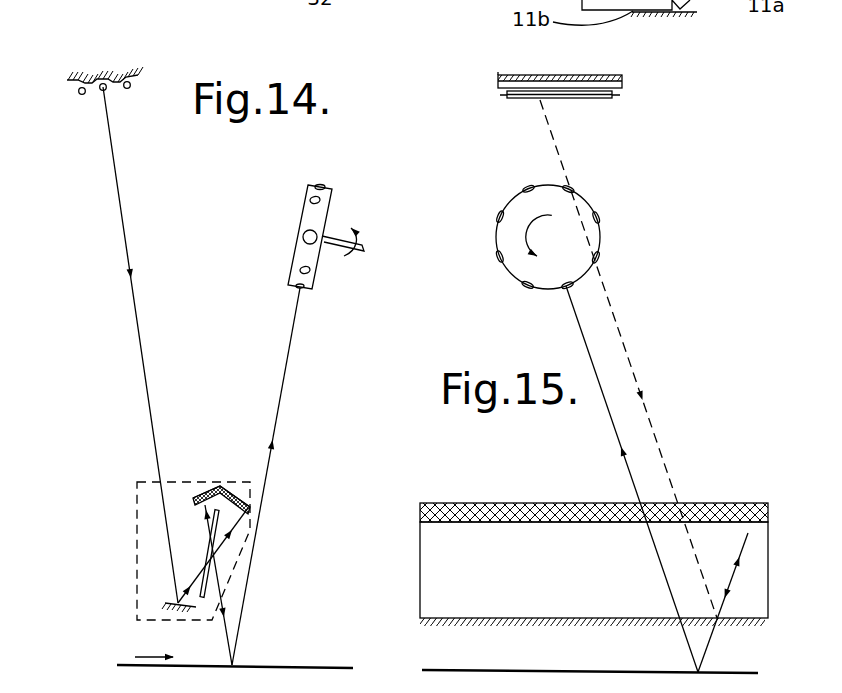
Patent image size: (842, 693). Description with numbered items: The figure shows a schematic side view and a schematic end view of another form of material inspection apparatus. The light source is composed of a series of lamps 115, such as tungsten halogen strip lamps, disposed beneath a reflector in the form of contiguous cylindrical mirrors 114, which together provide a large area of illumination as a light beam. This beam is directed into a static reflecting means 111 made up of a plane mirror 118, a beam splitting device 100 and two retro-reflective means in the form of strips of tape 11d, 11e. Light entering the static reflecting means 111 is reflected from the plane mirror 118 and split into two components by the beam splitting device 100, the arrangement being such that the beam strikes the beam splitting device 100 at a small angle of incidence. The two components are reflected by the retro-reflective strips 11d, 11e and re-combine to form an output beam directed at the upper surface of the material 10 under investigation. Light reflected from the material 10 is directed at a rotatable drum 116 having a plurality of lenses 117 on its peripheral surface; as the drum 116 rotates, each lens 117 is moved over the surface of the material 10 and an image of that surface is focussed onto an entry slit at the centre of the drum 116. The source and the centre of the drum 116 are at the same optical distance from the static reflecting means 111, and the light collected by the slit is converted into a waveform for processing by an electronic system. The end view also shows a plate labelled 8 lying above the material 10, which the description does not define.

In FIG. 14, the cylindrical mirrors 114 is at (85, 78).
In FIG. 15, the cylindrical mirrors 114 is at (498, 87).
In FIG. 14, the lamps 115 is at (105, 90).
In FIG. 15, the lamps 115 is at (600, 95).
In FIG. 14, the rotatable drum 116 is at (300, 250).
In FIG. 15, the rotatable drum 116 is at (518, 202).
In FIG. 14, the lenses 117 is at (310, 232).
In FIG. 15, the lenses 117 is at (598, 215).
In FIG. 14, the static reflecting means 111 is at (136, 504).
In FIG. 14, the retro-reflective strip of tape 11d is at (210, 487).
In FIG. 14, the retro-reflective strip of tape 11e is at (247, 498).
In FIG. 15, the retro-reflective strip of tape 11e is at (517, 503).
In FIG. 14, the plane mirror 118 is at (178, 603).
In FIG. 14, the beam splitting device 100 is at (205, 597).
In FIG. 15, the transparent plate / glass block 8 is at (623, 618).
In FIG. 15, the material 10 is at (497, 670).